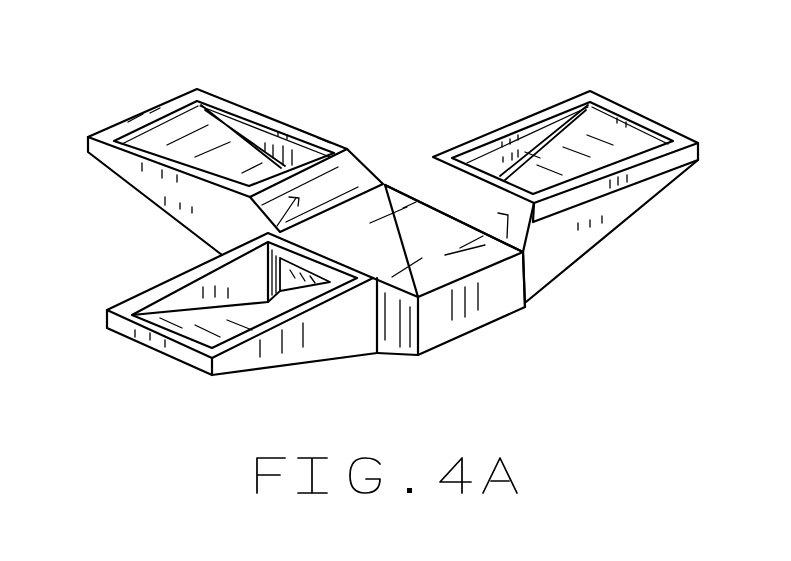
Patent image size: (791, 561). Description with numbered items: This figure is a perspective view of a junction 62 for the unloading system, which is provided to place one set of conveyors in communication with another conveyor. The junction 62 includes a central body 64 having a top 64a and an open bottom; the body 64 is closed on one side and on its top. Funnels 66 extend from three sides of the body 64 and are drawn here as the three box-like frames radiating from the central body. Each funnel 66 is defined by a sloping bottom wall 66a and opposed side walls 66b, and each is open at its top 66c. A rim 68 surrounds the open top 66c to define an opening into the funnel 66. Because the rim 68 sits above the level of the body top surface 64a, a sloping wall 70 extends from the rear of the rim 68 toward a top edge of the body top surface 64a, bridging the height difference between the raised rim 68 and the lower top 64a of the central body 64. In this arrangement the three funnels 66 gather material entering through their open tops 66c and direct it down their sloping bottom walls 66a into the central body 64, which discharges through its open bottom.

The junction 62 is at (403, 110).
The central body 64 is at (447, 286).
The body top surface 64a is at (430, 255).
The funnel 66 is at (231, 87).
The sloping bottom wall 66a is at (171, 134).
The side wall 66b is at (163, 197).
The open top 66c is at (265, 142).
The rim 68 is at (532, 117).
The sloping wall 70 is at (262, 221).